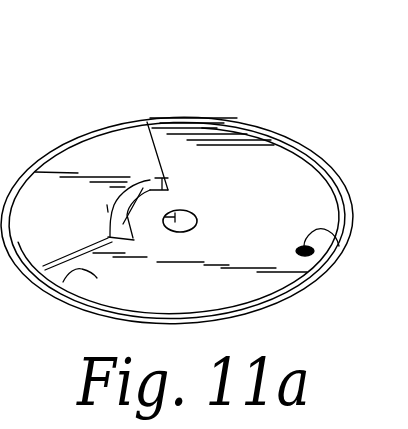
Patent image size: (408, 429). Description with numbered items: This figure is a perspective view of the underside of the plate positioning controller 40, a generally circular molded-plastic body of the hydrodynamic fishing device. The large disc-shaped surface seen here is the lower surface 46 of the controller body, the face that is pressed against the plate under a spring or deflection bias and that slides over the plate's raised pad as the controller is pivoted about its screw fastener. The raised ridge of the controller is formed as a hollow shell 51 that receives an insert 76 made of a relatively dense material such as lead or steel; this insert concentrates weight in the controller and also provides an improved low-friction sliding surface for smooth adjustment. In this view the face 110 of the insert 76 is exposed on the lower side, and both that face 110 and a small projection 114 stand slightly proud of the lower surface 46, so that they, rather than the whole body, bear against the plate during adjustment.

The plate positioning controller 40 is at (297, 145).
The insert 76 is at (93, 163).
The face of insert 110 is at (127, 143).
The hollow shell 51 is at (152, 180).
The lower surface 46 is at (65, 288).
The projection 114 is at (338, 247).